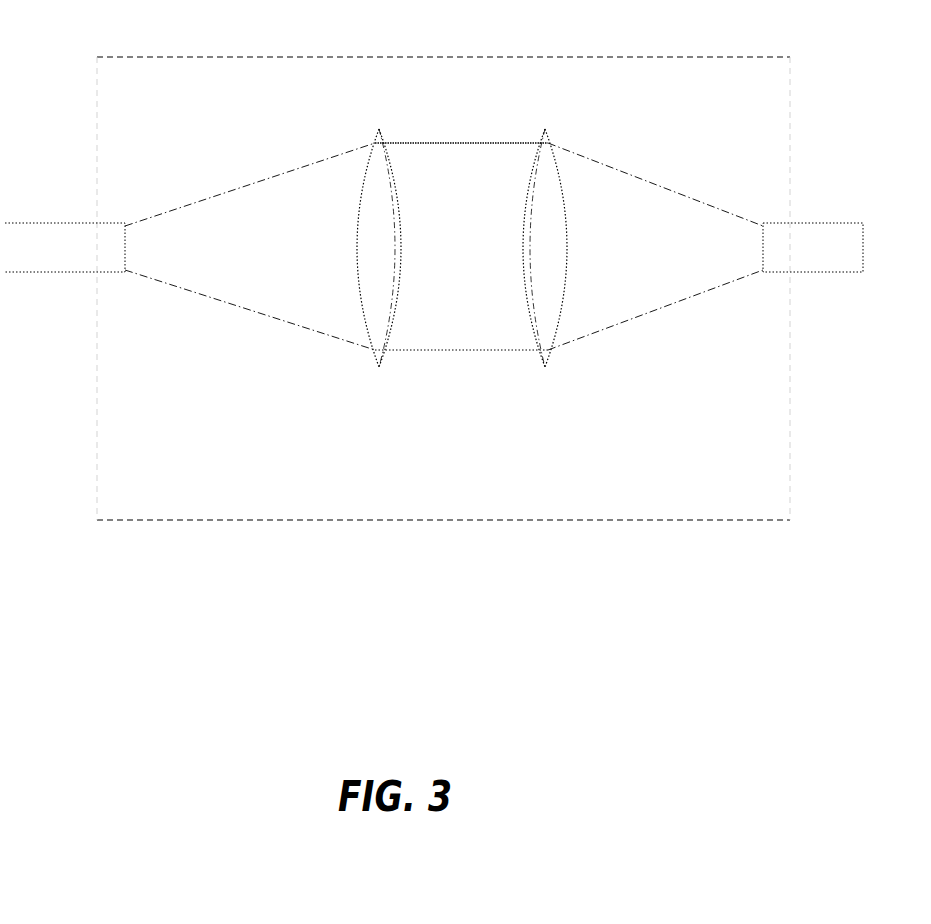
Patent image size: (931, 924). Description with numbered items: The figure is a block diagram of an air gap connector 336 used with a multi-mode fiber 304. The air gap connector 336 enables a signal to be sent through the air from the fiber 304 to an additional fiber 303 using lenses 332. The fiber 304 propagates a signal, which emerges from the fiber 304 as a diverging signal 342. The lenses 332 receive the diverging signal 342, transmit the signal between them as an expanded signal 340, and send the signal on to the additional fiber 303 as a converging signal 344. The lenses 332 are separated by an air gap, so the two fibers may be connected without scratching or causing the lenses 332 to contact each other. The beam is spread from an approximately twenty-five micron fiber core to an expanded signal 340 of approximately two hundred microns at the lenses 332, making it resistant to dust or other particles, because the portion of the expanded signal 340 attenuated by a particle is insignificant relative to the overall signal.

The air gap connector 336 is at (108, 56).
The multi-mode fiber 304 is at (80, 222).
The additional fiber 303 is at (800, 222).
The diverging signal 342 is at (245, 190).
The converging signal 344 is at (665, 190).
The expanded signal 340 is at (435, 143).
The lenses 332 is at (383, 367).